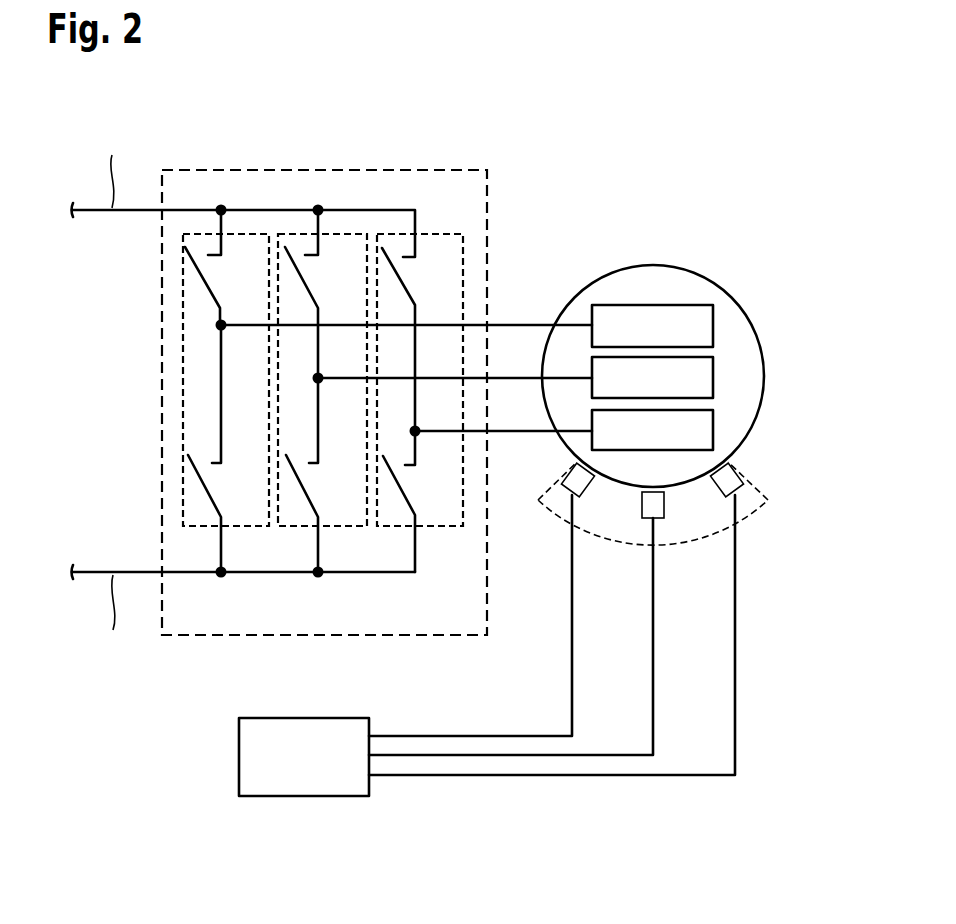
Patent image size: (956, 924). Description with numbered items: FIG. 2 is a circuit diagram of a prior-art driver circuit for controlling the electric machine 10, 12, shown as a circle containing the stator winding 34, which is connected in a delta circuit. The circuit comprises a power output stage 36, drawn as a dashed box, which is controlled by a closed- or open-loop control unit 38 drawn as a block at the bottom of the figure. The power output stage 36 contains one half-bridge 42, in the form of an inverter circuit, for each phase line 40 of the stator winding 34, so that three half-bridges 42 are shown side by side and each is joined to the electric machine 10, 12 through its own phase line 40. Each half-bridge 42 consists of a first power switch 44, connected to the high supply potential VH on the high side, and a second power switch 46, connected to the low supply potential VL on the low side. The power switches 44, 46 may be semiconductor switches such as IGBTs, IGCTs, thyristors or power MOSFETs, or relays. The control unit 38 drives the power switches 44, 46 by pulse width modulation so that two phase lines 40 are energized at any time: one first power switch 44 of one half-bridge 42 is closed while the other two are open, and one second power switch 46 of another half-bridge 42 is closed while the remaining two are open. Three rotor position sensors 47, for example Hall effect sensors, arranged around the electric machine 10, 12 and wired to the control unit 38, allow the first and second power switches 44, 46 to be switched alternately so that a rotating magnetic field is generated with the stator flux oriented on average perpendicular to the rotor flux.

The electric machine / motor 10 is at (684, 346).
The rotor / motor unit 12 is at (653, 376).
The stator winding 34 is at (676, 299).
The power output stage 36 is at (325, 390).
The closed- or open-loop control unit 38 is at (302, 776).
The phase line 40 is at (515, 325).
The half-bridge 42 is at (269, 336).
The first power switch 44 is at (203, 280).
The second power switch 46 is at (203, 490).
The rotor position sensor 47 is at (758, 502).